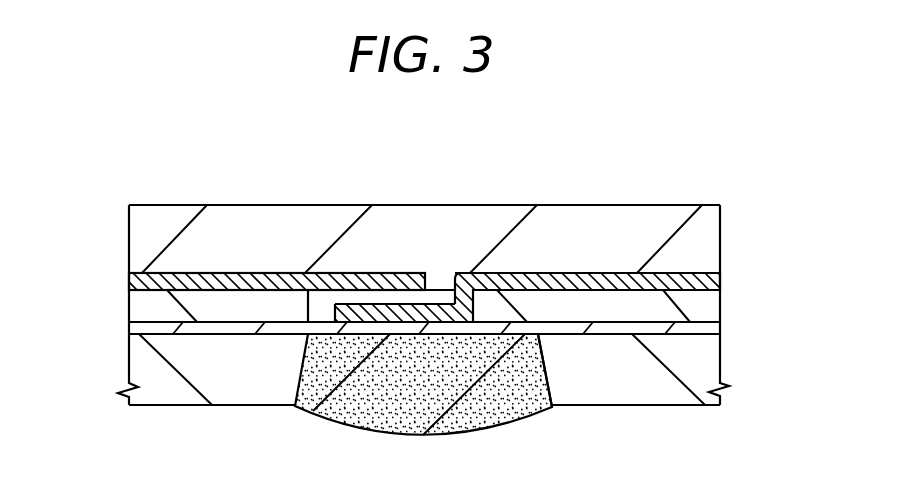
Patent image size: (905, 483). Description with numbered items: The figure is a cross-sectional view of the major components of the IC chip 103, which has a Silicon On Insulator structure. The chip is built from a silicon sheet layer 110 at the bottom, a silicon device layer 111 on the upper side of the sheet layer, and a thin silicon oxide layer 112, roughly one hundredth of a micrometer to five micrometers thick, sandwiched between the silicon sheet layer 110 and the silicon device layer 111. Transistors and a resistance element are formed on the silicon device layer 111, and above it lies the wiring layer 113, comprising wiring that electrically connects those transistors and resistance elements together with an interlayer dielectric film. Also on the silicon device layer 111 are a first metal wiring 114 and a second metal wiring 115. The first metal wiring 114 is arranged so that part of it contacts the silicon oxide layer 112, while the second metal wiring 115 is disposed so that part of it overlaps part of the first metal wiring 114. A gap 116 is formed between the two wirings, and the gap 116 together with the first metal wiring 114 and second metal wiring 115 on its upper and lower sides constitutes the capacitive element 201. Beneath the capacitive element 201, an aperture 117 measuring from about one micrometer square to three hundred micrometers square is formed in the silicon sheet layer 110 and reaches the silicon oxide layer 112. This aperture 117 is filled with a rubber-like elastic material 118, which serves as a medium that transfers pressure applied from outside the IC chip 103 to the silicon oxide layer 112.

The IC chip 103 is at (668, 198).
The silicon sheet layer 110 is at (662, 400).
The silicon device layer 111 is at (240, 315).
The silicon oxide layer 112 is at (598, 330).
The wiring layer 113 is at (593, 213).
The first metal wiring 114 is at (538, 280).
The second metal wiring 115 is at (368, 273).
The gap 116 is at (440, 298).
The aperture 117 is at (543, 385).
The rubber-like elastic material 118 is at (367, 415).
The capacitive element 201 is at (437, 227).